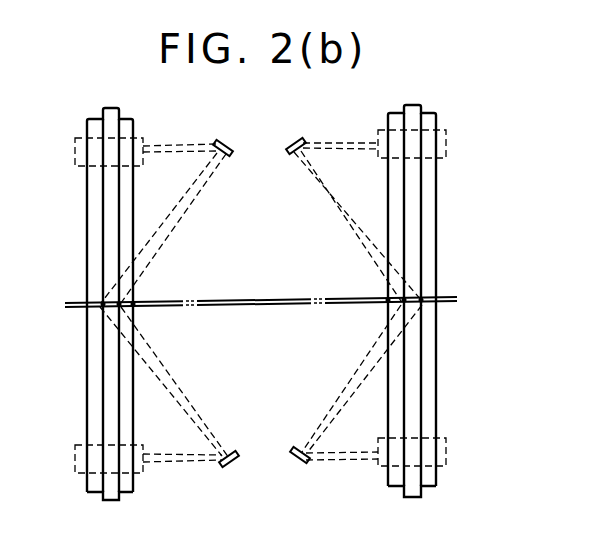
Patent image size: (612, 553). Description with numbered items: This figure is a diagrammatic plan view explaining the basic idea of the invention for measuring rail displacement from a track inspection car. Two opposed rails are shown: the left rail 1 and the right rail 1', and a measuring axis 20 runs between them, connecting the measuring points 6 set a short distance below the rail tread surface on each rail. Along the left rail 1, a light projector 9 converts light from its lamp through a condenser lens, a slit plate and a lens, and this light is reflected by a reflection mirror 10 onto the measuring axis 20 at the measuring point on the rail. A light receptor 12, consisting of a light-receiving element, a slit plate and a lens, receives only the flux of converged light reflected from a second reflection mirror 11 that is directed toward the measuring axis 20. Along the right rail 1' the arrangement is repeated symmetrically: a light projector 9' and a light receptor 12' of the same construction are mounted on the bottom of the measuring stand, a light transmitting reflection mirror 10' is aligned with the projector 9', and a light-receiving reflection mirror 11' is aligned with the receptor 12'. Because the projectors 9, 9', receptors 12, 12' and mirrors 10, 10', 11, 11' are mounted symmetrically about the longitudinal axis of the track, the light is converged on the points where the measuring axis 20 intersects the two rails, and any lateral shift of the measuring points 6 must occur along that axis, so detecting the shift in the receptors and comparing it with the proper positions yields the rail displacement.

The rail 1 is at (123, 321).
The right rail 1' is at (404, 316).
The measuring points 6 is at (121, 303).
The light projector 9 is at (86, 152).
The light projector 9' is at (438, 452).
The reflector 10 is at (172, 199).
The light transmitting reflection mirror 10' is at (355, 407).
The reflector 11 is at (176, 409).
The light-receiving reflection mirror 11' is at (354, 195).
The light receptor 12 is at (88, 460).
The light receptor 12' is at (443, 144).
The measuring axis 20 is at (442, 298).